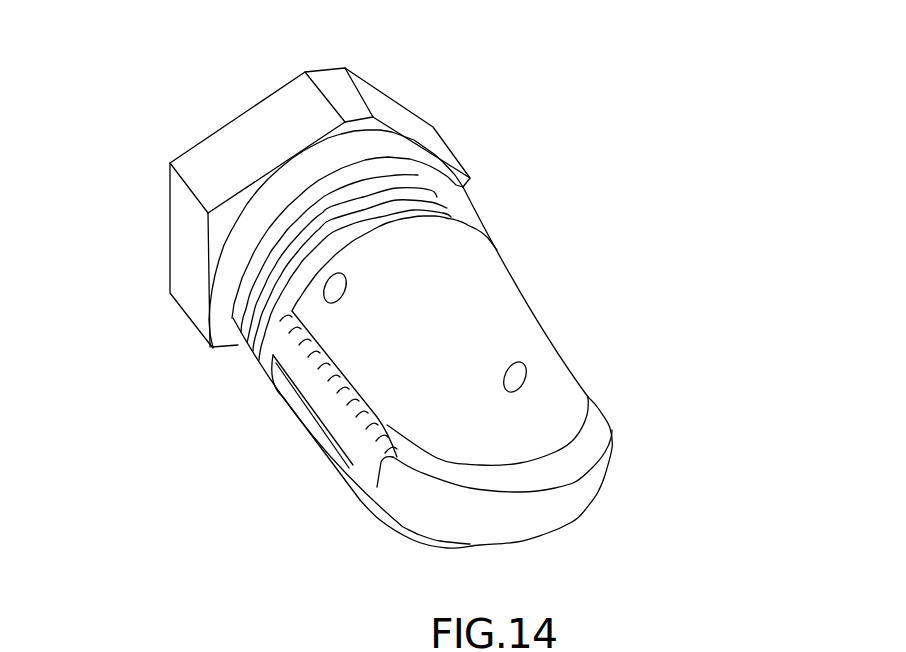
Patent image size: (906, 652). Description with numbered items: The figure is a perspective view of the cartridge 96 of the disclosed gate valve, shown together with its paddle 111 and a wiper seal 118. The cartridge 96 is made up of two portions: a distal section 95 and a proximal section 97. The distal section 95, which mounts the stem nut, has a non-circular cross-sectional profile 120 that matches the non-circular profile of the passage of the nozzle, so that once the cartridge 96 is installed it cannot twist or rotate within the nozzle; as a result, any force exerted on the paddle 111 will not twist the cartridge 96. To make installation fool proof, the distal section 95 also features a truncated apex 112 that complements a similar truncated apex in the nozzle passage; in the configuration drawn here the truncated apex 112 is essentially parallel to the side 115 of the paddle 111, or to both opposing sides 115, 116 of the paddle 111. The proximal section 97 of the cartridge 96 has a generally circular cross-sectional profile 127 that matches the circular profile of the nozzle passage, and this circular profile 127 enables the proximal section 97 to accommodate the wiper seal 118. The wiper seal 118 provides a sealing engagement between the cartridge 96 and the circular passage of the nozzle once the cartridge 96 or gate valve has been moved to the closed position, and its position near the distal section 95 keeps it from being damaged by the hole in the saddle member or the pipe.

The distal section 95 is at (193, 275).
The cartridge 96 is at (288, 463).
The proximal section 97 is at (523, 330).
The paddle 111 is at (562, 510).
The truncated apex 112 is at (330, 85).
The side of the paddle 115 is at (582, 465).
The opposing side of the paddle 116 is at (425, 523).
The wiper seal 118 is at (430, 188).
The non-circular cross-sectional profile 120 is at (210, 157).
The circular cross-sectional profile 127 is at (422, 415).